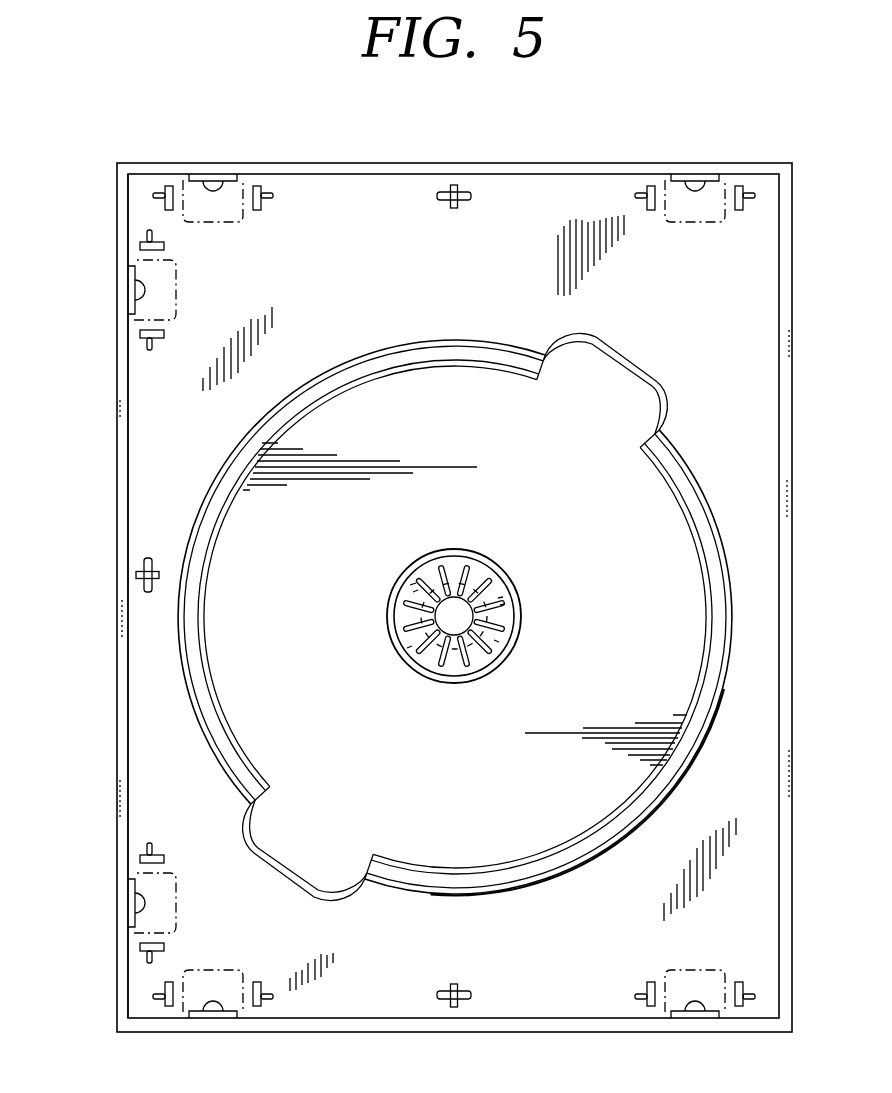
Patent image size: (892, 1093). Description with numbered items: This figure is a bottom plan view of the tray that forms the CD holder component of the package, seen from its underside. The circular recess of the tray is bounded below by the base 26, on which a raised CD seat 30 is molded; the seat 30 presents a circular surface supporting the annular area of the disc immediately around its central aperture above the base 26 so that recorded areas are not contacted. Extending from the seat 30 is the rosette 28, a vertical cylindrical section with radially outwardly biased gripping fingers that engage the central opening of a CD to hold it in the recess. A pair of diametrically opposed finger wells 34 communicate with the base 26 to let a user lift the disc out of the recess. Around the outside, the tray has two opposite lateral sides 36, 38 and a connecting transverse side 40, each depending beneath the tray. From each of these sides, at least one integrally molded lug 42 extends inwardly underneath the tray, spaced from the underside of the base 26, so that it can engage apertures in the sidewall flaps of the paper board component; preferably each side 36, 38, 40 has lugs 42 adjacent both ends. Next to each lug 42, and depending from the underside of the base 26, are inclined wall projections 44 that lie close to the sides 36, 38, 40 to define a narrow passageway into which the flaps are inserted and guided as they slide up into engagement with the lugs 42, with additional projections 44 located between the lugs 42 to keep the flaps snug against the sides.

The base 26 is at (539, 777).
The rosette 28 is at (515, 652).
The raised CD seat 30 is at (400, 621).
The finger wells 34 is at (630, 402).
The lateral side 36 is at (603, 1017).
The lateral side 38 is at (395, 175).
The connecting transverse side 40 is at (135, 752).
The lug 42 is at (215, 176).
The inclined wall projection 44 is at (458, 985).